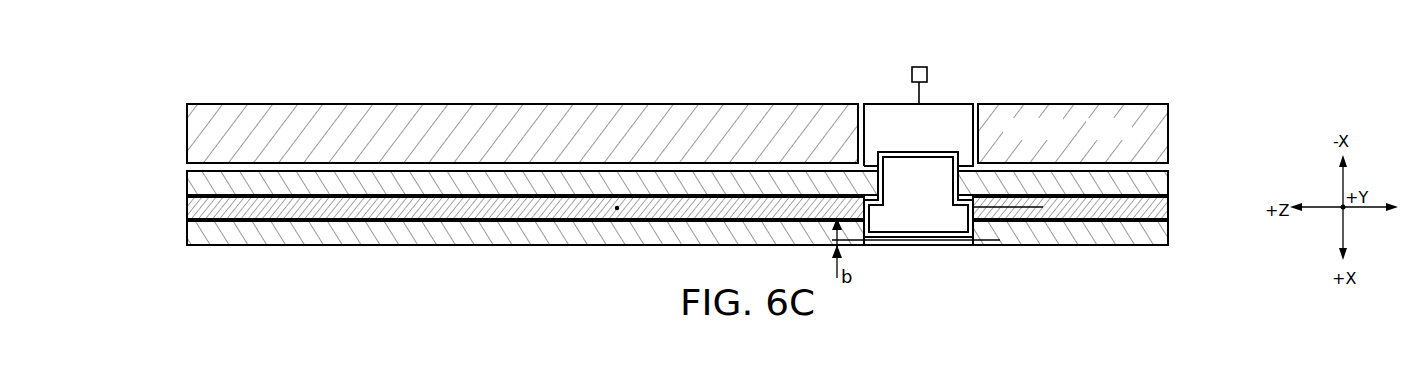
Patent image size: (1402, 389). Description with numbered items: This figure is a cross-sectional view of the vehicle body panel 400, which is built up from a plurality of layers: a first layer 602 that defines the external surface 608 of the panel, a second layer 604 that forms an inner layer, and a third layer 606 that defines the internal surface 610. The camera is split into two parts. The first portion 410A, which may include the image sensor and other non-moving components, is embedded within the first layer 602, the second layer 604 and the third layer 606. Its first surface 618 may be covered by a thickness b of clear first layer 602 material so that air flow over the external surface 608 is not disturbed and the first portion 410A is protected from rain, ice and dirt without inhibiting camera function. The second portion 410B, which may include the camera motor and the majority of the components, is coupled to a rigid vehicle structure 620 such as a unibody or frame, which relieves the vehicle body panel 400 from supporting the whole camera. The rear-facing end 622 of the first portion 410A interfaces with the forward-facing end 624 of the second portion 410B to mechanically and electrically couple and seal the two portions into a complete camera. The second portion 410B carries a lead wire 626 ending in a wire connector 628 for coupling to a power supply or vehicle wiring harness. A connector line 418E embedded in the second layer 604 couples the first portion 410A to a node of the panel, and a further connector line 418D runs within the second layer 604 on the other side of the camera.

The vehicle body panel 400 is at (165, 203).
The vehicle structure 620 is at (505, 104).
The internal surface 610 is at (1093, 168).
The second portion 410B is at (973, 130).
The forward-facing end 624 is at (899, 143).
The lead wire 626 is at (923, 90).
The wire connector 628 is at (920, 66).
The third layer 606 is at (1165, 183).
The second layer 604 is at (1165, 210).
The first layer 602 is at (1165, 233).
The external surface 608 is at (1093, 247).
The first surface 618 is at (898, 242).
The first portion 410A is at (960, 225).
The rear-facing end 622 is at (923, 168).
The conductive trace 418D is at (617, 210).
The connector line 418E is at (1018, 210).